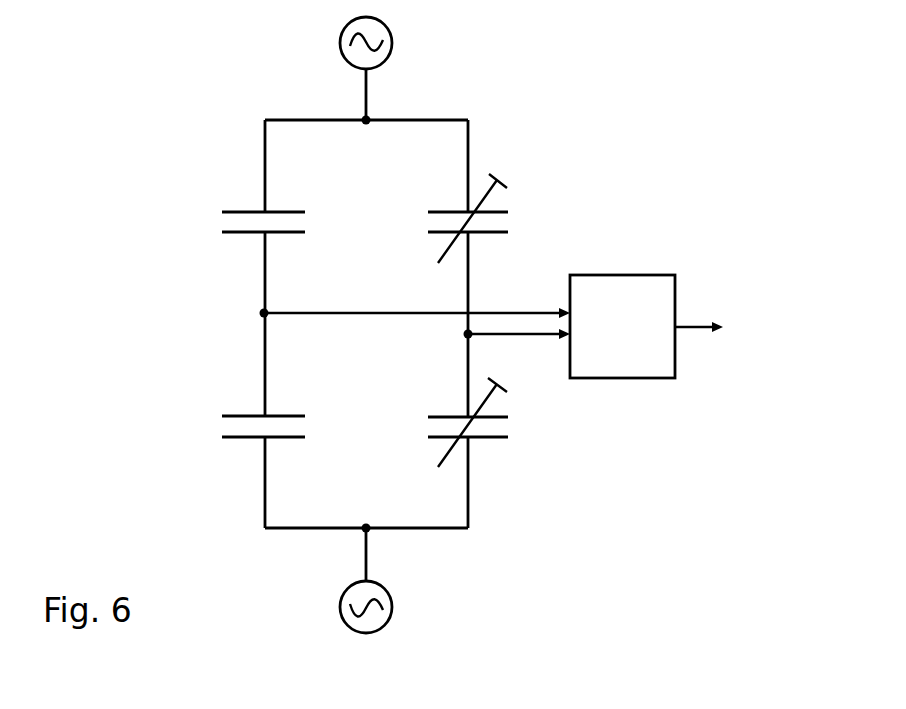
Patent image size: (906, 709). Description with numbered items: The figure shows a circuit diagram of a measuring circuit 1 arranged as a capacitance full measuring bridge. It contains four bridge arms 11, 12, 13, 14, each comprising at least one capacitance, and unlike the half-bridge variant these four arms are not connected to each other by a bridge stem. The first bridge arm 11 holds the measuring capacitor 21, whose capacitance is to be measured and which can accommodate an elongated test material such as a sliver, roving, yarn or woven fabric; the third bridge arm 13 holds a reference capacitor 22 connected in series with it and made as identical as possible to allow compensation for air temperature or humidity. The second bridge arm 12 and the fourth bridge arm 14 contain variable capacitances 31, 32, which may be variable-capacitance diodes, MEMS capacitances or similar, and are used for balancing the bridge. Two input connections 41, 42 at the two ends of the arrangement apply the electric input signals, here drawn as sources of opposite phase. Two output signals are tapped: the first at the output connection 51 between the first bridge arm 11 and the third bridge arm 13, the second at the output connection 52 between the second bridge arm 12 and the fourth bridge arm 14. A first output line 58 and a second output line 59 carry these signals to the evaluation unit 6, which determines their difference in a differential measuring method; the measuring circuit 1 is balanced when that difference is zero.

The measuring circuit 1 is at (640, 136).
The evaluation unit 6 is at (621, 273).
The first bridge arm 11 is at (167, 225).
The second bridge arm 12 is at (701, 225).
The third bridge arm 13 is at (167, 428).
The fourth bridge arm 14 is at (692, 434).
The measuring capacitor 21 is at (287, 212).
The reference capacitor 22 is at (277, 439).
The variable capacitance 31 is at (497, 212).
The variable capacitance 32 is at (492, 437).
The input connection 41 is at (366, 125).
The input connection 42 is at (366, 523).
The output connection 51 is at (258, 313).
The output connection 52 is at (463, 337).
The first output line 58 is at (530, 309).
The second output line 59 is at (532, 338).